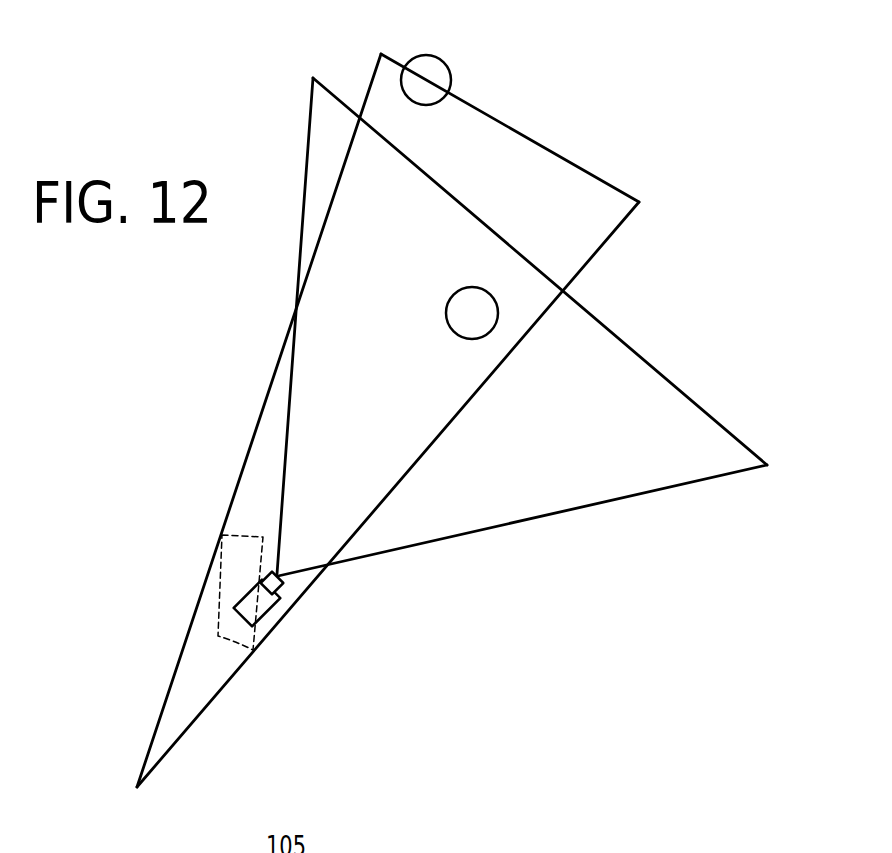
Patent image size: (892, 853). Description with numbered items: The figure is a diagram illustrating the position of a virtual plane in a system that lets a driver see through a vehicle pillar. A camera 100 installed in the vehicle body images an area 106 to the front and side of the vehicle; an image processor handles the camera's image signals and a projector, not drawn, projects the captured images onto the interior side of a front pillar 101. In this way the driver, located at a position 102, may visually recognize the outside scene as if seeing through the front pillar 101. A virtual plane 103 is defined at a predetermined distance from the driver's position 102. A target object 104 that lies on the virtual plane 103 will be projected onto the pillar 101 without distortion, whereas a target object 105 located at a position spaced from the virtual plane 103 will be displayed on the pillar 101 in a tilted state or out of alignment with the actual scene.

The camera 100 is at (262, 607).
The front pillar 101 is at (235, 531).
The driver's position 102 is at (137, 788).
The virtual plane 103 is at (552, 148).
The target object 104 is at (418, 57).
The target object 105 is at (462, 288).
The area 106 is at (587, 508).